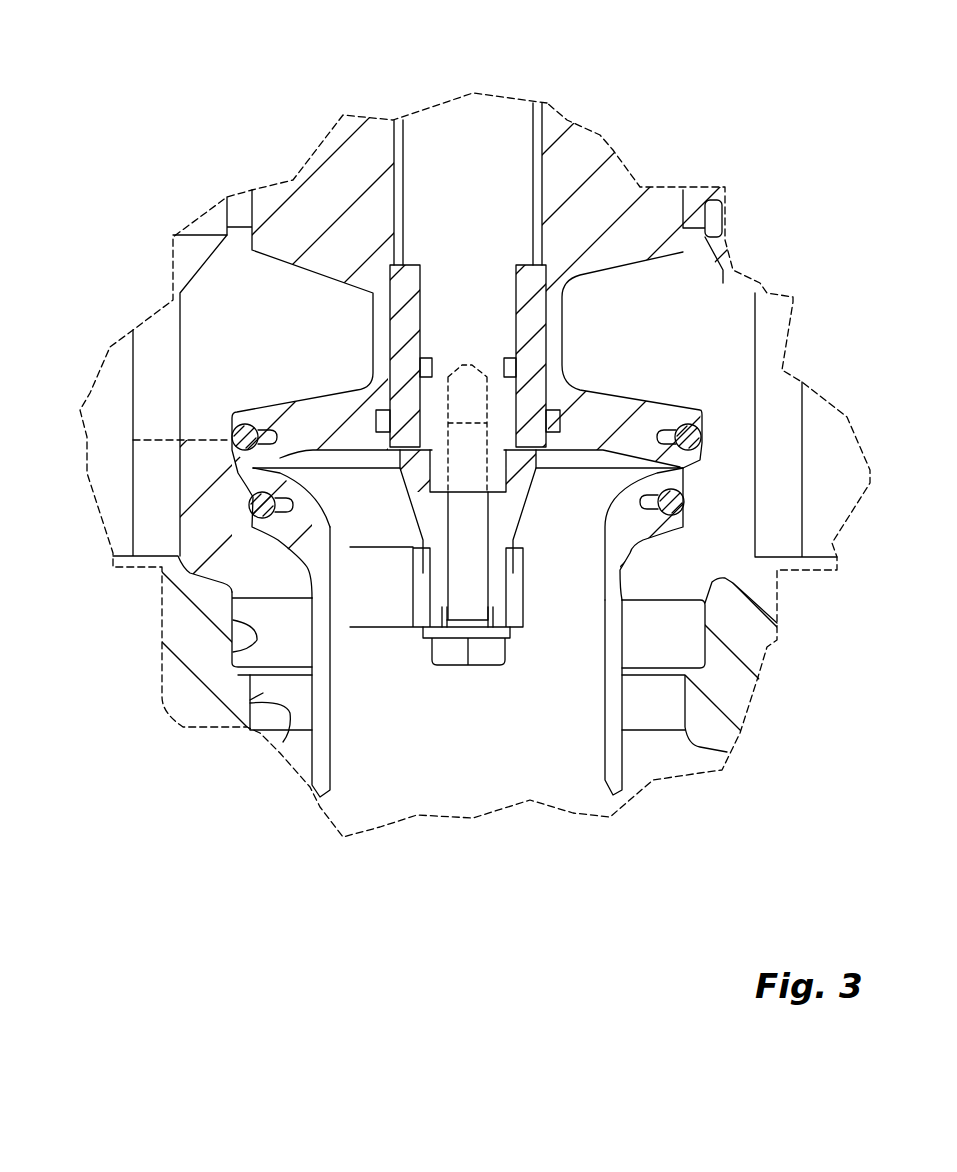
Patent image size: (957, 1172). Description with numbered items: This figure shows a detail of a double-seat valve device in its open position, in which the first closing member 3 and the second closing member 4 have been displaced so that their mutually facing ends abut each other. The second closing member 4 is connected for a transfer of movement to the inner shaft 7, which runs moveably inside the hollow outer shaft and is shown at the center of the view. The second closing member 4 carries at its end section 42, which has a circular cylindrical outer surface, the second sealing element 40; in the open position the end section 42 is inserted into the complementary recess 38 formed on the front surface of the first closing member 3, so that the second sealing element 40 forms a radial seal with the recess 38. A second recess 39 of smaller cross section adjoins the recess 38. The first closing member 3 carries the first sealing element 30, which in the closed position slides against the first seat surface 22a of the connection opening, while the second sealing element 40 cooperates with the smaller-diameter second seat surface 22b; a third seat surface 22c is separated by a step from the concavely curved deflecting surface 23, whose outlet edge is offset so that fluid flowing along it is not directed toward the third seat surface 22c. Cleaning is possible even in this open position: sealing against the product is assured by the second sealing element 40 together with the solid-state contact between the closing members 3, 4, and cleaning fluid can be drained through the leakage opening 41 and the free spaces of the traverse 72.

The first closing member 3 is at (590, 415).
The second closing member 4 is at (620, 790).
The inner shaft 7 is at (495, 118).
The first seat surface 22a is at (233, 650).
The second seat surface 22b is at (290, 732).
The third seat surface 22c is at (232, 672).
The deflecting surface 23 is at (245, 645).
The first sealing element 30 is at (240, 437).
The recess 38 is at (625, 482).
The second recess 39 is at (600, 460).
The second sealing element 40 is at (262, 505).
The leakage opening 41 is at (337, 702).
The end section 42 is at (693, 518).
The traverse 72 is at (380, 605).